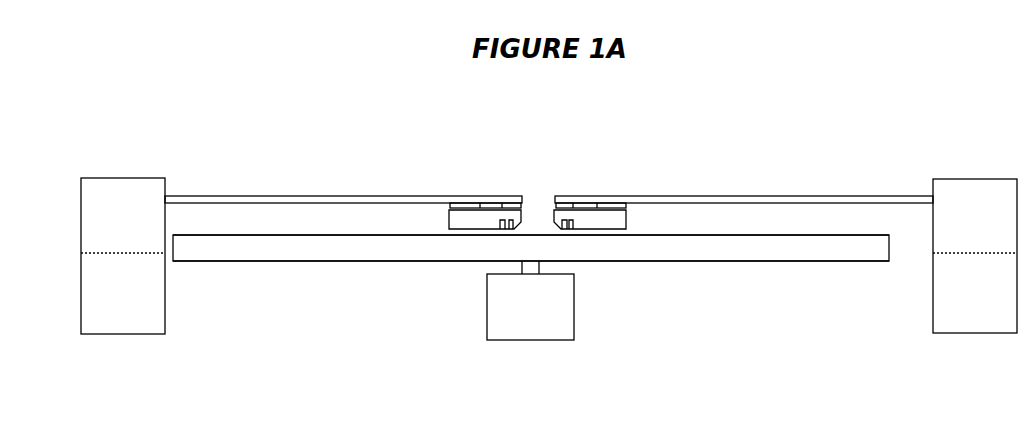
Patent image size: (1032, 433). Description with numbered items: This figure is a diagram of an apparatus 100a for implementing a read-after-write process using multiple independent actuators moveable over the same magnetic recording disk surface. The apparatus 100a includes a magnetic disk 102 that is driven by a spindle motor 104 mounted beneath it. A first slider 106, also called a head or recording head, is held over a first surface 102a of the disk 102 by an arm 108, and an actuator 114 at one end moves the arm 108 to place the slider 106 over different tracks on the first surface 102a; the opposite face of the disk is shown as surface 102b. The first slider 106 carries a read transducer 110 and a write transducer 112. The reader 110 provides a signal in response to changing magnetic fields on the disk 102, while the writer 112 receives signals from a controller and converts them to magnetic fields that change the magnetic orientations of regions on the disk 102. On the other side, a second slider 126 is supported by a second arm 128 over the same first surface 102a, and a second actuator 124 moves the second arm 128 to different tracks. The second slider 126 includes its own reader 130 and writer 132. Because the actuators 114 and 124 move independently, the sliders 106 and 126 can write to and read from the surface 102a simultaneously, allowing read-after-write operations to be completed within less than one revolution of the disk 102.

The apparatus 100a is at (694, 100).
The magnetic disk 102 is at (843, 251).
The first surface 102a is at (725, 235).
The bottom surface of base 102b is at (757, 261).
The spindle motor 104 is at (538, 340).
The first slider 106 is at (463, 218).
The arm 108 is at (318, 195).
The read transducer 110 is at (512, 222).
The write transducer 112 is at (502, 222).
The actuator 114 is at (112, 178).
The second actuator 124 is at (965, 179).
The second slider 126 is at (613, 218).
The second arm 128 is at (757, 195).
The reader 130 is at (565, 222).
The writer 132 is at (571, 222).